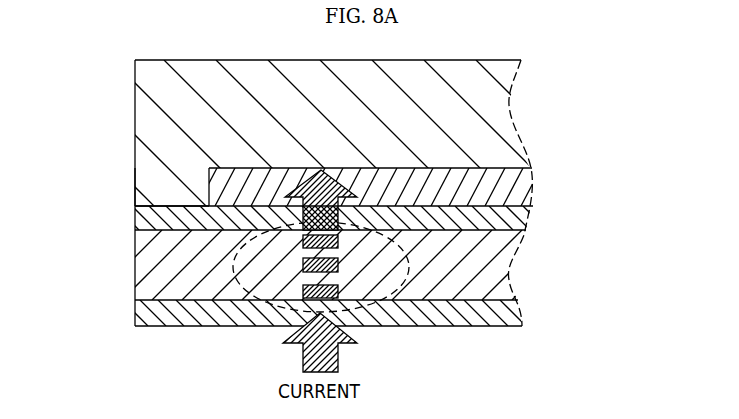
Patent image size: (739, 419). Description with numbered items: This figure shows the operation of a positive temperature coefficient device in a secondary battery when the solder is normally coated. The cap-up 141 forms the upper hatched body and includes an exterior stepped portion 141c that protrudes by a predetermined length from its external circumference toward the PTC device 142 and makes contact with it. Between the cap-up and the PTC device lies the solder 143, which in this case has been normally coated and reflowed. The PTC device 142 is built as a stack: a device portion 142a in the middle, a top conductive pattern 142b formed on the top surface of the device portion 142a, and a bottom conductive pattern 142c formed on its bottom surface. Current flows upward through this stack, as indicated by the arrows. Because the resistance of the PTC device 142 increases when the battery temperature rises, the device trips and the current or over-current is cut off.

The cap-up 141 is at (492, 113).
The exterior stepped portion 141c is at (155, 189).
The solder 143 is at (523, 188).
The PTC device 142 is at (392, 265).
The device portion 142a is at (500, 260).
The top conductive pattern 142b is at (500, 216).
The bottom conductive pattern 142c is at (374, 313).